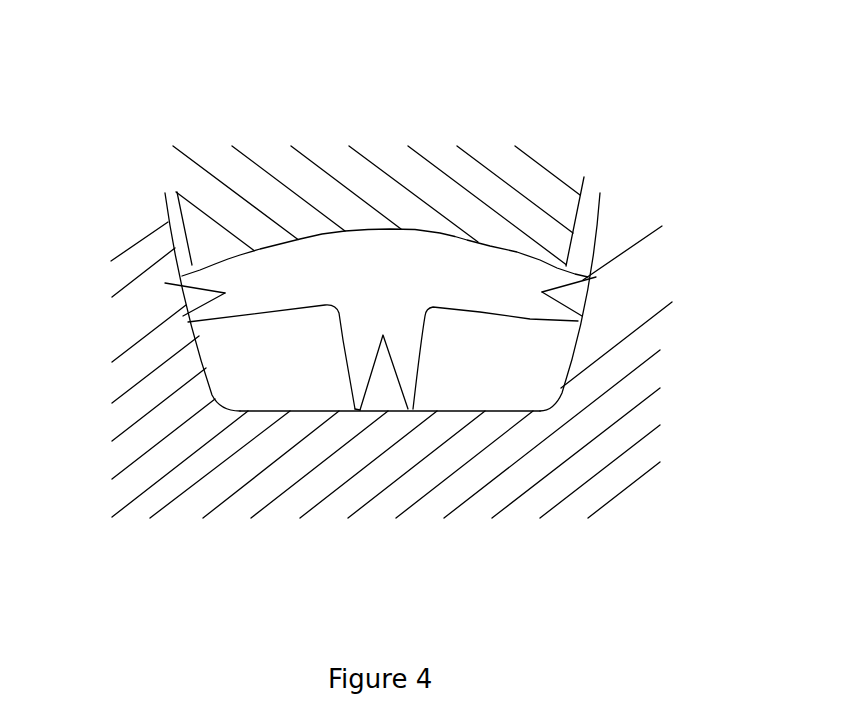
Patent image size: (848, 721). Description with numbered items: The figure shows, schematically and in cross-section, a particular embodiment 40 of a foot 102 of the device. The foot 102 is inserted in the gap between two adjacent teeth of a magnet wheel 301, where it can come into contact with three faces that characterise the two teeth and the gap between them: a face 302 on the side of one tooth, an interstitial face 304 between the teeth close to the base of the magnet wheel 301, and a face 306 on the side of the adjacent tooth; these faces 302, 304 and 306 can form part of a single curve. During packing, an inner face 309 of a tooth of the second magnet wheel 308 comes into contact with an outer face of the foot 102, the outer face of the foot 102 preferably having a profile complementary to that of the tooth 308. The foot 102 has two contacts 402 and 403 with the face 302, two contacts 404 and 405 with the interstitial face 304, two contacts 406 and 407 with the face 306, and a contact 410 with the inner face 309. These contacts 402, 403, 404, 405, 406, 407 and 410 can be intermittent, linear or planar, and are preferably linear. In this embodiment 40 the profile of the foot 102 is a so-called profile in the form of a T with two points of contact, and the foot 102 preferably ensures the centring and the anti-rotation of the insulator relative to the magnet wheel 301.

The particular embodiment 40 is at (98, 83).
The foot 102 is at (282, 267).
The magnet wheel 301 is at (642, 415).
The face on the side of a tooth 302 is at (172, 246).
The interstitial face 304 is at (250, 413).
The face on the side of an adjacent tooth 306 is at (590, 241).
The second magnet wheel 308 is at (318, 197).
The inner face 309 is at (388, 230).
The contact 402 is at (165, 283).
The contact 403 is at (183, 316).
The contact 404 is at (355, 410).
The contact 405 is at (410, 409).
The contact 406 is at (580, 277).
The contact 407 is at (580, 315).
The contact 410 is at (424, 230).